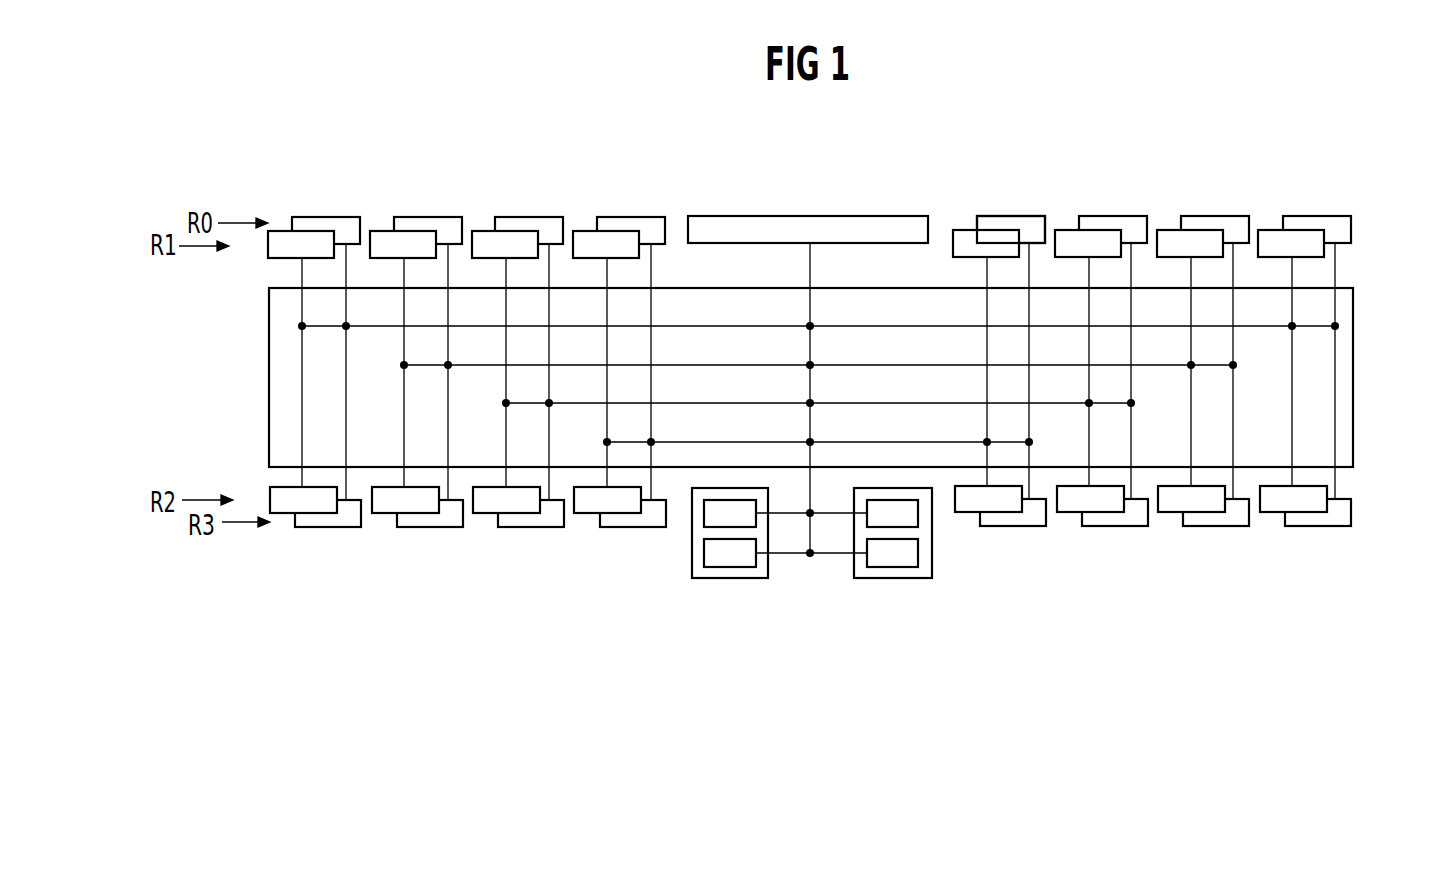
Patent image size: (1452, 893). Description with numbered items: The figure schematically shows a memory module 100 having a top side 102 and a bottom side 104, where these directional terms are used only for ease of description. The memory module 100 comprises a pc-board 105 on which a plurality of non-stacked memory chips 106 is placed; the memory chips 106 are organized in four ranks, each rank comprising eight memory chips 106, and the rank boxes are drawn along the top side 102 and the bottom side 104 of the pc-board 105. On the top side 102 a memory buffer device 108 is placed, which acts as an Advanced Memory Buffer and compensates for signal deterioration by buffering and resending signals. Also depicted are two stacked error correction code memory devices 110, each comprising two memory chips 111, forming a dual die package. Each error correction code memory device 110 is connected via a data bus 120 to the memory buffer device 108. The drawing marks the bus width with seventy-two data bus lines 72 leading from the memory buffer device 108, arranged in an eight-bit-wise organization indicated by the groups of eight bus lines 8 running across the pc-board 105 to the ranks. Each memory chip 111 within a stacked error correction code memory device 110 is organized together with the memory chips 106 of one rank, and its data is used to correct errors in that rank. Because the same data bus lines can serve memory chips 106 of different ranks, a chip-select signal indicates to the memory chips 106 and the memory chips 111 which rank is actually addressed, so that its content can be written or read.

The memory module 100 is at (237, 176).
The top side 102 is at (1366, 208).
The bottom side 104 is at (1366, 478).
The pc-board 105 is at (1354, 352).
The memory chips 106 is at (1010, 216).
The memory buffer device 108 is at (822, 216).
The stacked error correction code memory device 110 is at (690, 568).
The memory chips 111 is at (731, 568).
The data bus 120 is at (812, 310).
The bus connection line 72 is at (795, 277).
The bus line width 8 is at (907, 429).